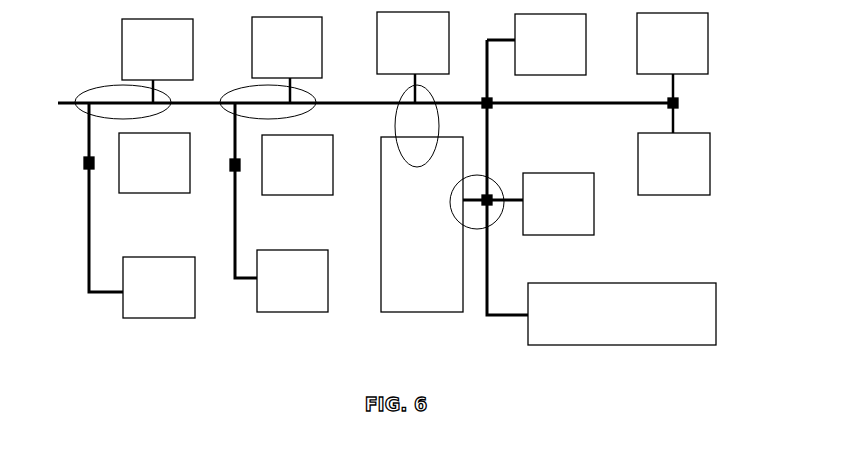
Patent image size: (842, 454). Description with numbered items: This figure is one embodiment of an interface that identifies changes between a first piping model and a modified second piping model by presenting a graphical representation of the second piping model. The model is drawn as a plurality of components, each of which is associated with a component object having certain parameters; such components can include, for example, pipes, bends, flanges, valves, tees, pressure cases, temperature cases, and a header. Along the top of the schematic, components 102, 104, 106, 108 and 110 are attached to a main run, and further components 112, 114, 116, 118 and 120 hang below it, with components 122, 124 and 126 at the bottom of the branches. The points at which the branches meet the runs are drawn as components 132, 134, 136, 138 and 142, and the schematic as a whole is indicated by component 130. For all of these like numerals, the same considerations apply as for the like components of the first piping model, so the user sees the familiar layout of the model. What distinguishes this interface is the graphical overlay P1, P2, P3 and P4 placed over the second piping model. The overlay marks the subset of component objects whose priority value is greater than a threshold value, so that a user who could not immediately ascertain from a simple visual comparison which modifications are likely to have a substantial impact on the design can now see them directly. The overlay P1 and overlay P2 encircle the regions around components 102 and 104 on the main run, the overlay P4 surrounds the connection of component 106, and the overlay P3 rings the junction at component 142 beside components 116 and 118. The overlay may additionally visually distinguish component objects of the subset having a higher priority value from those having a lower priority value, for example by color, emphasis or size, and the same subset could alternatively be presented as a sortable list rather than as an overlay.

The component 102 is at (157, 49).
The component 104 is at (287, 47).
The component 106 is at (413, 43).
The component 108 is at (550, 44).
The component 110 is at (672, 43).
The component 112 is at (154, 163).
The component 114 is at (297, 165).
The component 116 is at (422, 224).
The component 118 is at (558, 204).
The component 120 is at (674, 164).
The component 122 is at (159, 287).
The component 124 is at (292, 281).
The component 126 is at (622, 314).
The component 130 is at (712, 118).
The component 132 is at (481, 94).
The component 134 is at (678, 96).
The component 136 is at (95, 165).
The component 138 is at (240, 170).
The component 142 is at (490, 208).
The graphical overlay P1 is at (98, 87).
The graphical overlay P2 is at (247, 92).
The graphical overlay P3 is at (490, 183).
The graphical overlay P4 is at (392, 123).